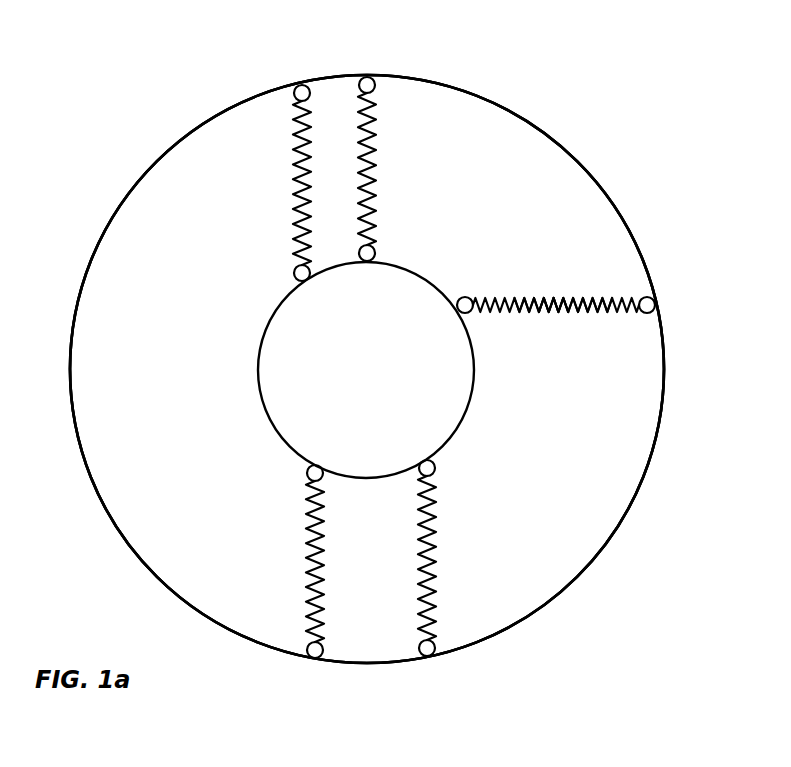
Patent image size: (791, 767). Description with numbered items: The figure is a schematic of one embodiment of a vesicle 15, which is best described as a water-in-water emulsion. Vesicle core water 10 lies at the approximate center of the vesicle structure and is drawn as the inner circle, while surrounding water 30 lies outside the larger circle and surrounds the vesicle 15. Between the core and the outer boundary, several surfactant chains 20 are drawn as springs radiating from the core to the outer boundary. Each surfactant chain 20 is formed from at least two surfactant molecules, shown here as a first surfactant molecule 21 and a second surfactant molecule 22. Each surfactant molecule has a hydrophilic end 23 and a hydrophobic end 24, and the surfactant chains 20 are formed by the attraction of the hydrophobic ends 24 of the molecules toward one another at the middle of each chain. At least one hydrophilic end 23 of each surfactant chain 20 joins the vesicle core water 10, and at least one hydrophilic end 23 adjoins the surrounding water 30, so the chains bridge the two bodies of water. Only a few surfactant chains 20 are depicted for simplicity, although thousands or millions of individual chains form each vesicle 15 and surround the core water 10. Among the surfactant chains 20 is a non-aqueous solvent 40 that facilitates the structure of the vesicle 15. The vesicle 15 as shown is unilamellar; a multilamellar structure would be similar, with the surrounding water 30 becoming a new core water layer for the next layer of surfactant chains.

The vesicle core water 10 is at (393, 290).
The vesicle 15 is at (628, 512).
The surfactant chain 20 is at (295, 132).
The first surfactant molecule 21 is at (600, 302).
The second surfactant molecule 22 is at (537, 312).
The hydrophilic end 23 is at (458, 307).
The hydrophobic end 24 is at (556, 302).
The surrounding water 30 is at (143, 117).
The non-aqueous solvent 40 is at (515, 572).